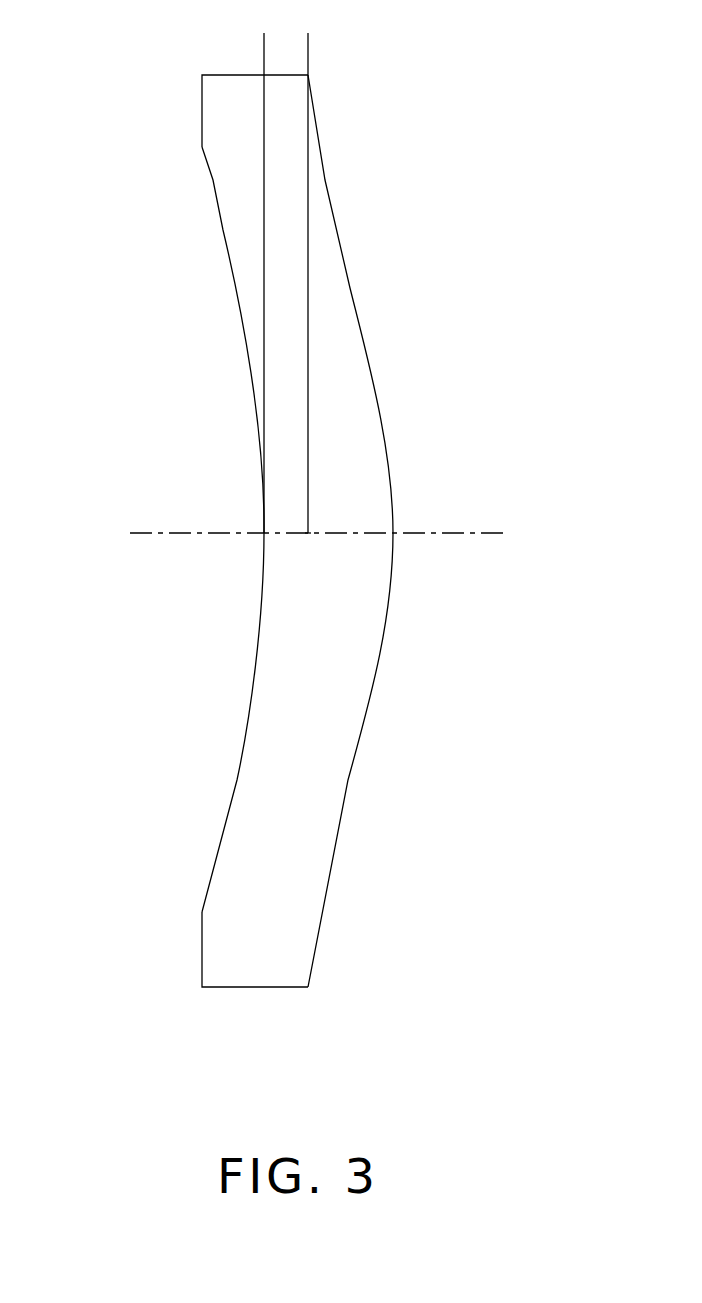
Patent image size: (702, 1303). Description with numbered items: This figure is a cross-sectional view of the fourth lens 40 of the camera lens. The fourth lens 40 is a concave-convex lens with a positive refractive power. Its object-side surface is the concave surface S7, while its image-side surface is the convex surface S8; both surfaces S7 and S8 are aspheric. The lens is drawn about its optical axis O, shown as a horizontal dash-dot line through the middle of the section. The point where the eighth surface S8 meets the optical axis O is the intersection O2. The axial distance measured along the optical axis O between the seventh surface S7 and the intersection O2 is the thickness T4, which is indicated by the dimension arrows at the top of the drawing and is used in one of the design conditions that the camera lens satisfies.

The fourth lens 40 is at (306, 531).
The concave surface S7 is at (223, 228).
The convex surface S8 is at (350, 288).
The axial distance T4 is at (343, 44).
The optical axis O is at (299, 533).
The intersection O2 is at (308, 533).